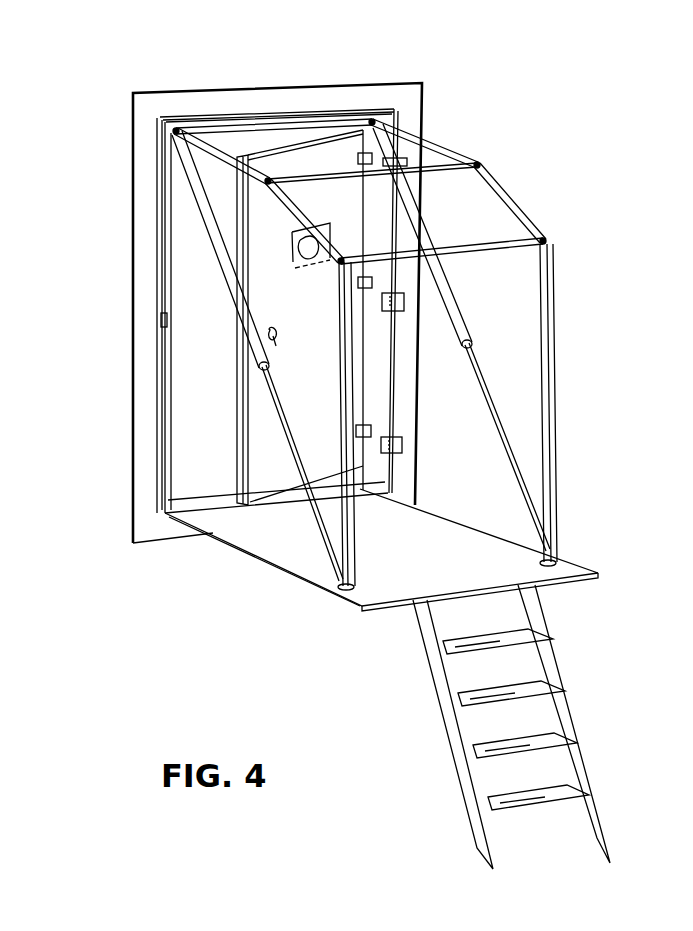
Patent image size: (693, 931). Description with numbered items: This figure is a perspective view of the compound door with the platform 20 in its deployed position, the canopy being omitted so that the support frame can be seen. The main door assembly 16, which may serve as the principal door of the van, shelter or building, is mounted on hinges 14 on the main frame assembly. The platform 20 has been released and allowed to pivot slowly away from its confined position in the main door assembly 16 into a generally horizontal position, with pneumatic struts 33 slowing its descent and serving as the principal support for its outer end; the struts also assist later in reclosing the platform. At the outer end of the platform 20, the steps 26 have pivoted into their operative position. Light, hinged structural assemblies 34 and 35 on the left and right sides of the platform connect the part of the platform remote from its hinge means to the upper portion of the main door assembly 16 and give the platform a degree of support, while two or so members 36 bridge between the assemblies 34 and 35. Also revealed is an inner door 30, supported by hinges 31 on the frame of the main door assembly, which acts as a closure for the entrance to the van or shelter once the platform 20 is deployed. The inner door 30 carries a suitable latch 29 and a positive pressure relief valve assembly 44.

The hinges 14 is at (402, 311).
The main door assembly 16 is at (166, 346).
The platform 20 is at (424, 527).
The steps 26 is at (440, 688).
The latch 29 is at (276, 340).
The inner door 30 is at (253, 443).
The hinges 31 is at (373, 431).
The pneumatic struts 33 is at (214, 250).
The hinged structural assembly 34 is at (341, 527).
The hinged structural assembly 35 is at (563, 509).
The members 36 is at (490, 248).
The positive pressure relief valve assembly 44 is at (322, 262).